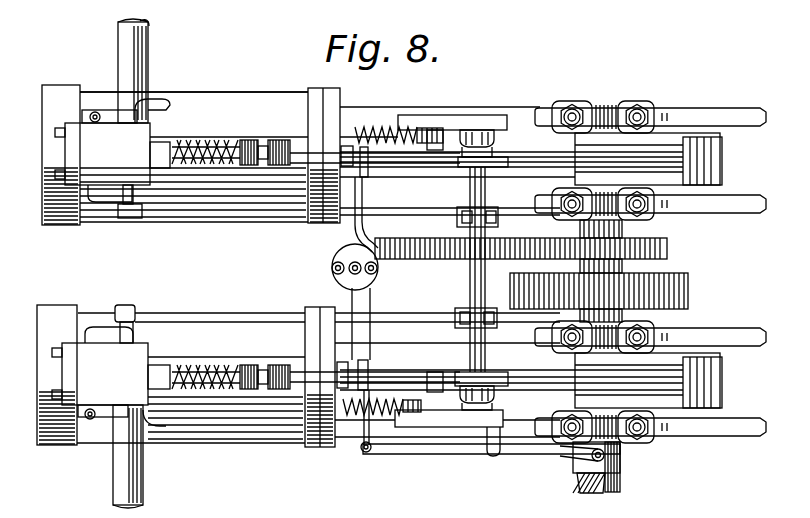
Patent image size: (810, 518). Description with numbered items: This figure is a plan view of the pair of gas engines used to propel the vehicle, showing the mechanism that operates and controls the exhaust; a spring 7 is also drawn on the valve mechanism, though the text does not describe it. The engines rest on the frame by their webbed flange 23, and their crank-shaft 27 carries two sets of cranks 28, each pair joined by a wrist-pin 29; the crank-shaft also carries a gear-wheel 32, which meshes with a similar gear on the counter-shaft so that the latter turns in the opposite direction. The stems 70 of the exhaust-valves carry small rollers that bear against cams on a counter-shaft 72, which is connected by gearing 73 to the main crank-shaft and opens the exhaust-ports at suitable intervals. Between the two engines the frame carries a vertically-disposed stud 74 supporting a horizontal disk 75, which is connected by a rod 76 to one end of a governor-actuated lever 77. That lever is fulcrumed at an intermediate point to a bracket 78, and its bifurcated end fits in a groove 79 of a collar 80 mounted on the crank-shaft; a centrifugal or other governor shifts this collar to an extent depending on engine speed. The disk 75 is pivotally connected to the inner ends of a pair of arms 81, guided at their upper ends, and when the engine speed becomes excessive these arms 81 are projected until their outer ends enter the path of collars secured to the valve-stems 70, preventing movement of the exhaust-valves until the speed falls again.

The spring 7 is at (295, 158).
The webbed flange 23 is at (747, 208).
The crank-shaft 27 is at (607, 483).
The cranks 28 is at (717, 177).
The wrist-pin 29 is at (697, 137).
The gear-wheel 32 is at (688, 286).
The stems 70 is at (292, 380).
The counter-shaft 72 is at (468, 287).
The gearing 73 is at (533, 238).
The stud 74 is at (333, 258).
The disk 75 is at (379, 277).
The rod 76 is at (362, 430).
The governor-actuated lever 77 is at (438, 449).
The bracket 78 is at (494, 457).
The groove 79 is at (607, 457).
The collar 80 is at (577, 467).
The arms 81 is at (355, 237).